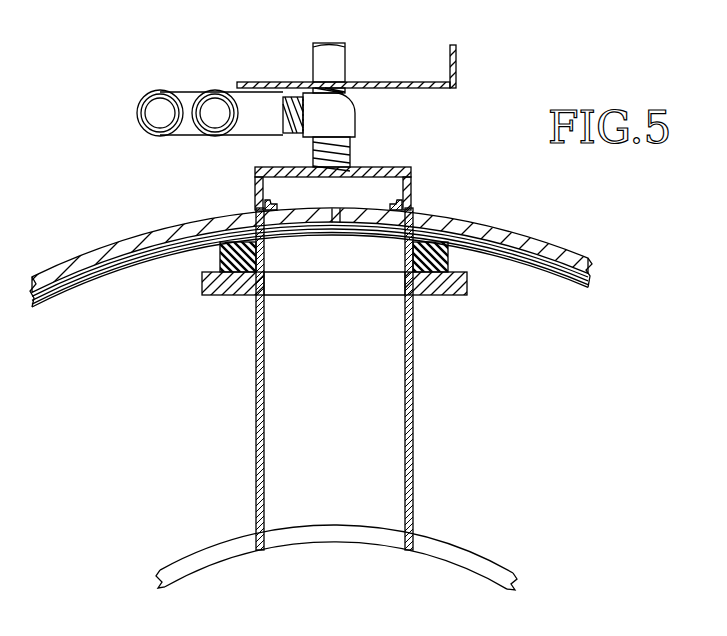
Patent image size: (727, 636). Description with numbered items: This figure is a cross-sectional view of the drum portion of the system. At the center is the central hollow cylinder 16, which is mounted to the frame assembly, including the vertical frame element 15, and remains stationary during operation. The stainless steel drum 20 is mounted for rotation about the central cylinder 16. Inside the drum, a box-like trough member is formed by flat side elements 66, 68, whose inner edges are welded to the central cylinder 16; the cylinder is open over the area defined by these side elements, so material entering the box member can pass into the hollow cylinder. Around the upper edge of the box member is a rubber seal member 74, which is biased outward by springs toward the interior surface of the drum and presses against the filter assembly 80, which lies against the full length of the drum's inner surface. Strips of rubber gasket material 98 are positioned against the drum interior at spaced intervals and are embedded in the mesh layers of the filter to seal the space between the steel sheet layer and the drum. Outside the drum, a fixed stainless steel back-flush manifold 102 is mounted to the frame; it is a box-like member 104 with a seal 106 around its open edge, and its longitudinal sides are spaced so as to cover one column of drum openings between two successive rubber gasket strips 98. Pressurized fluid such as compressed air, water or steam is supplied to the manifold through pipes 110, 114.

The vertical frame element 15 is at (457, 70).
The central hollow cylinder 16 is at (488, 555).
The drum 20 is at (515, 228).
The side element 66 is at (258, 428).
The side element 68 is at (417, 457).
The seal member 74 is at (203, 261).
The filter assembly 80 is at (567, 283).
The rubber gasket strips 98 is at (220, 220).
The back-flush manifold 102 is at (432, 169).
The box-like member 104 is at (253, 186).
The seal 106 is at (253, 205).
The pipe 110 is at (158, 100).
The pipe 114 is at (215, 100).